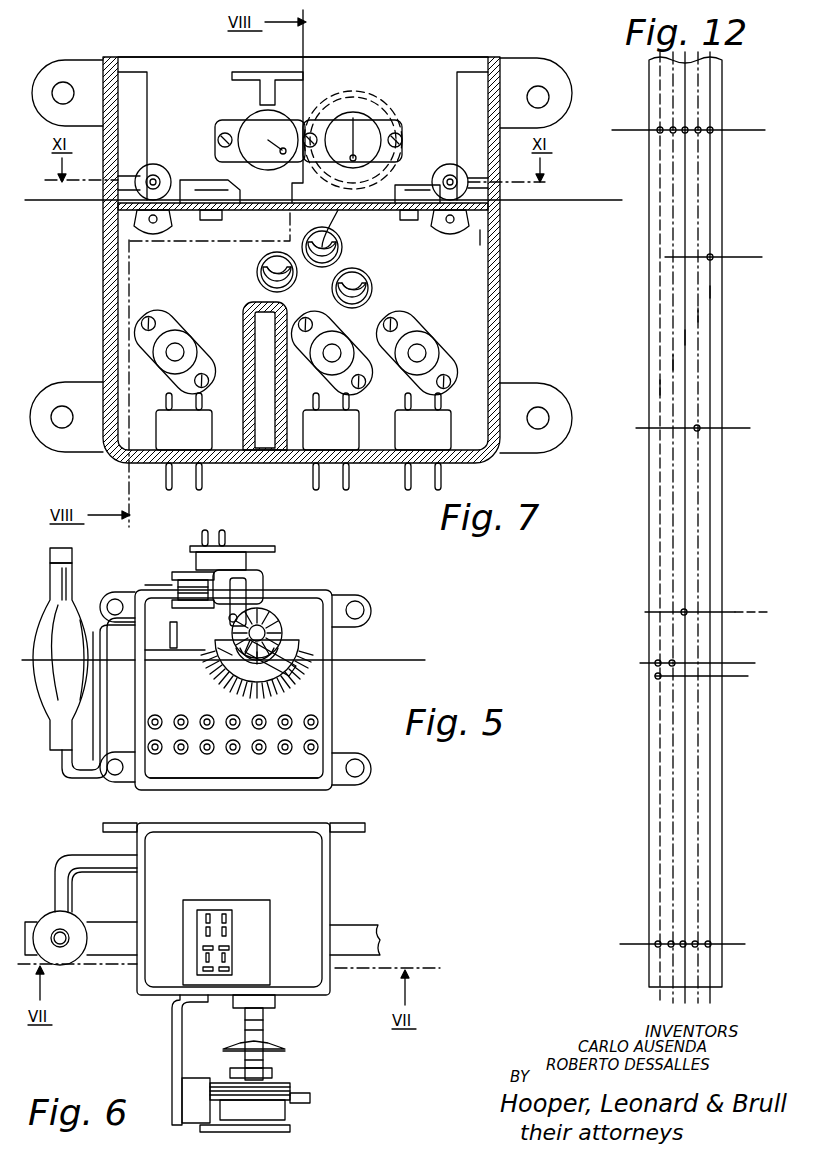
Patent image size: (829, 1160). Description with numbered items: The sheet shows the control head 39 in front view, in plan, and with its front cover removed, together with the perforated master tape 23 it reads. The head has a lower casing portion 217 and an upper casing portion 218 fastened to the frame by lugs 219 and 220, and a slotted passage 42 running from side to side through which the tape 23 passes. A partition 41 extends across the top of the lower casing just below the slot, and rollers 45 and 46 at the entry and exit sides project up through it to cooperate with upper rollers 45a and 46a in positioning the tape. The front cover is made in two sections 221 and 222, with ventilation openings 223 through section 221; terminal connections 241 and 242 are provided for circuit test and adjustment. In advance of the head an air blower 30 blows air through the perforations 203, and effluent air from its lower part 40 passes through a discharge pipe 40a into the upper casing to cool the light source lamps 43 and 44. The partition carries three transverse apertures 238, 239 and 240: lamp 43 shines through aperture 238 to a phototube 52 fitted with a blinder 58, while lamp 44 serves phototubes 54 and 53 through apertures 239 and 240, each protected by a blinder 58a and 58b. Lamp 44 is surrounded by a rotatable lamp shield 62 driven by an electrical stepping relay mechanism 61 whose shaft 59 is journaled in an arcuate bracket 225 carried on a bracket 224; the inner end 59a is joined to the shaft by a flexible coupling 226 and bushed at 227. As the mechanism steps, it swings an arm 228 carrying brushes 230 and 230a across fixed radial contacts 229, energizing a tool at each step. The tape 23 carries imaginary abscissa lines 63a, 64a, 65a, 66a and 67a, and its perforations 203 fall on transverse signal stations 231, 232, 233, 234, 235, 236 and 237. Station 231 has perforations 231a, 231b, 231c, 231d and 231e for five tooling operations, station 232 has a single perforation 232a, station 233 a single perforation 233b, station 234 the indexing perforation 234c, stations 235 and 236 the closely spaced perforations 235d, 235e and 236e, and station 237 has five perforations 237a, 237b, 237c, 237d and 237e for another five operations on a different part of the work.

In FIG. 7, the master tape 23 is at (580, 200).
In FIG. 12, the master tape 23 is at (716, 550).
In FIG. 5, the master tape 23 is at (398, 660).
In FIG. 6, the master tape 23 is at (370, 932).
In FIG. 5, the air blower 30 is at (40, 635).
In FIG. 6, the air blower 30 is at (65, 965).
In FIG. 7, the control head 39 is at (103, 312).
In FIG. 5, the control head 39 is at (325, 725).
In FIG. 6, the control head 39 is at (332, 865).
In FIG. 5, the lower part of blower 40 is at (45, 690).
In FIG. 5, the discharge pipe 40a is at (62, 772).
In FIG. 6, the discharge pipe 40a is at (55, 880).
In FIG. 7, the partition 41 is at (488, 240).
In FIG. 7, the slotted passage 42 is at (103, 205).
In FIG. 7, the light source lamp 43 is at (250, 128).
In FIG. 7, the light source lamp 44 is at (356, 120).
In FIG. 7, the roller 45 is at (150, 238).
In FIG. 7, the upper roller 45a is at (158, 166).
In FIG. 7, the roller 46 is at (445, 238).
In FIG. 7, the upper roller 46a is at (444, 166).
In FIG. 7, the phototube 52 is at (257, 272).
In FIG. 7, the phototube 53 is at (372, 280).
In FIG. 7, the phototube 54 is at (342, 243).
In FIG. 7, the blinder 58 is at (263, 285).
In FIG. 7, the blinder 58a is at (340, 255).
In FIG. 7, the blinder 58b is at (370, 295).
In FIG. 5, the stepping relay shaft 59 is at (265, 633).
In FIG. 6, the stepping relay shaft 59 is at (263, 1070).
In FIG. 6, the inner end of shaft 59a is at (263, 1030).
In FIG. 5, the electrical stepping relay mechanism 61 is at (276, 652).
In FIG. 6, the electrical stepping relay mechanism 61 is at (295, 1105).
In FIG. 7, the rotatable lamp shield 62 is at (383, 100).
In FIG. 12, the abscissa line 63a is at (712, 290).
In FIG. 12, the abscissa line 64a is at (699, 313).
In FIG. 12, the abscissa line 65a is at (686, 336).
In FIG. 12, the abscissa line 66a is at (674, 360).
In FIG. 12, the abscissa line 67a is at (661, 386).
In FIG. 12, the perforations 203 is at (672, 132).
In FIG. 7, the lower casing portion 217 is at (392, 466).
In FIG. 5, the lower casing portion 217 is at (210, 790).
In FIG. 7, the upper casing portion 218 is at (443, 57).
In FIG. 5, the upper casing portion 218 is at (322, 592).
In FIG. 7, the lug 219 is at (52, 452).
In FIG. 5, the lug 219 is at (115, 786).
In FIG. 7, the lug 220 is at (72, 62).
In FIG. 5, the lug 220 is at (112, 592).
In FIG. 6, the lug 220 is at (103, 826).
In FIG. 5, the front cover section 221 is at (285, 778).
In FIG. 5, the front cover section 222 is at (292, 592).
In FIG. 5, the openings 223 is at (262, 755).
In FIG. 6, the bracket 224 is at (172, 1055).
In FIG. 5, the arcuate bracket 225 is at (178, 630).
In FIG. 6, the flexible coupling 226 is at (285, 1050).
In FIG. 6, the bushing 227 is at (275, 1002).
In FIG. 5, the arm 228 is at (300, 675).
In FIG. 5, the radial contacts 229 is at (222, 690).
In FIG. 5, the brush 230 is at (300, 665).
In FIG. 5, the brush 230a is at (218, 658).
In FIG. 12, the transverse line 231 is at (740, 130).
In FIG. 12, the perforation 231a is at (711, 128).
In FIG. 12, the perforation 231b is at (699, 128).
In FIG. 12, the perforation 231c is at (686, 128).
In FIG. 12, the perforation 231d is at (672, 128).
In FIG. 12, the perforation 231e is at (658, 129).
In FIG. 12, the transverse line 232 is at (738, 257).
In FIG. 12, the perforation 232a is at (711, 254).
In FIG. 12, the transverse line 233 is at (738, 430).
In FIG. 12, the perforation 233b is at (698, 426).
In FIG. 12, the transverse line 234 is at (709, 599).
In FIG. 12, the perforation 234c is at (685, 610).
In FIG. 12, the transverse line 235 is at (738, 662).
In FIG. 12, the perforation 235d is at (670, 661).
In FIG. 12, the perforation 235e is at (656, 664).
In FIG. 12, the transverse line 236 is at (738, 677).
In FIG. 12, the perforation 236e is at (656, 678).
In FIG. 12, the transverse line 237 is at (735, 944).
In FIG. 12, the perforation 237a is at (707, 942).
In FIG. 12, the perforation 237b is at (694, 942).
In FIG. 12, the perforation 237c is at (682, 942).
In FIG. 12, the perforation 237d is at (670, 942).
In FIG. 12, the perforation 237e is at (657, 942).
In FIG. 7, the aperture 238 is at (290, 203).
In FIG. 7, the aperture 239 is at (325, 210).
In FIG. 7, the aperture 240 is at (352, 210).
In FIG. 6, the terminal connection 241 is at (218, 915).
In FIG. 5, the terminal connection 242 is at (232, 560).